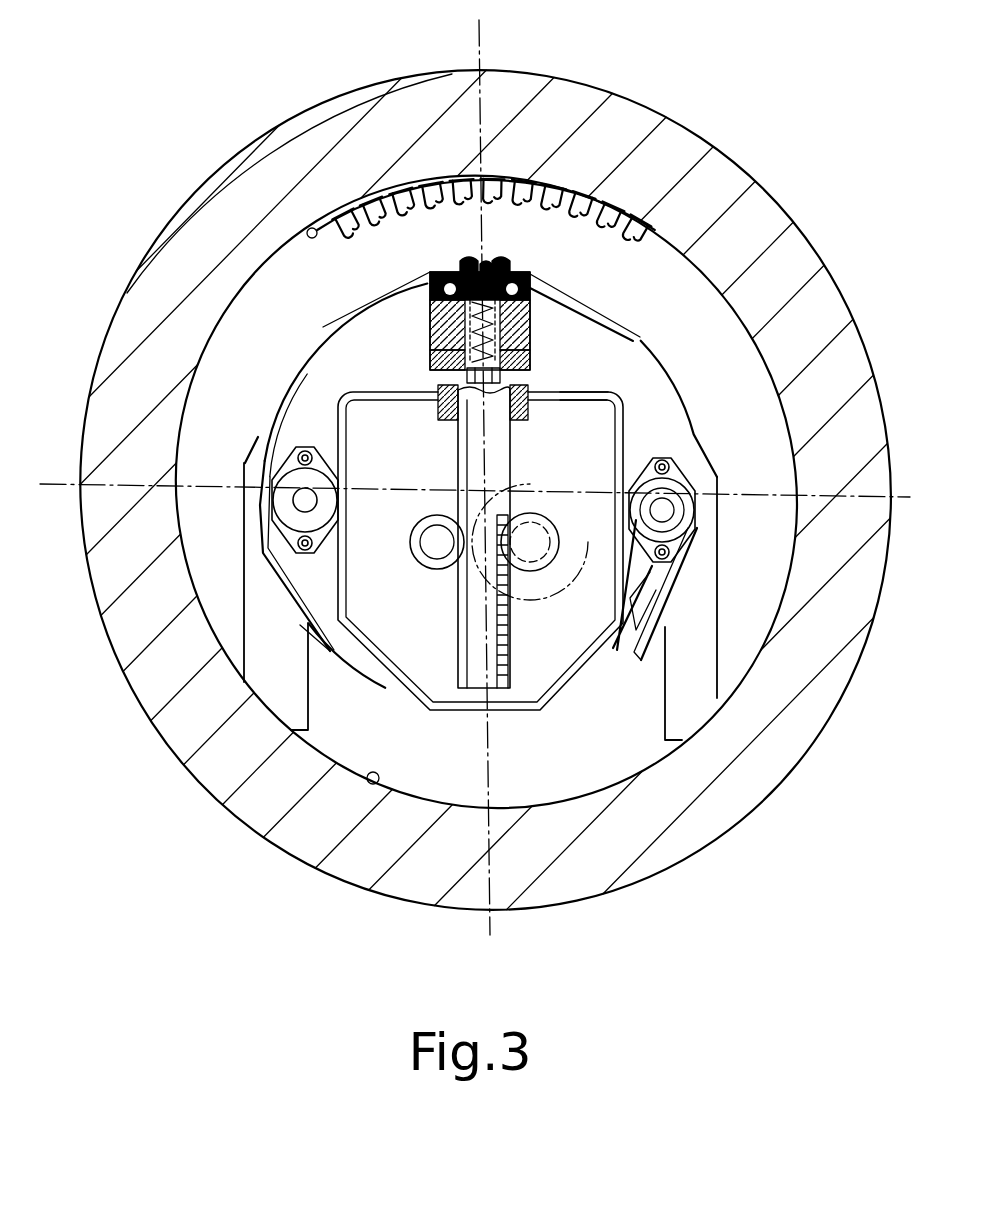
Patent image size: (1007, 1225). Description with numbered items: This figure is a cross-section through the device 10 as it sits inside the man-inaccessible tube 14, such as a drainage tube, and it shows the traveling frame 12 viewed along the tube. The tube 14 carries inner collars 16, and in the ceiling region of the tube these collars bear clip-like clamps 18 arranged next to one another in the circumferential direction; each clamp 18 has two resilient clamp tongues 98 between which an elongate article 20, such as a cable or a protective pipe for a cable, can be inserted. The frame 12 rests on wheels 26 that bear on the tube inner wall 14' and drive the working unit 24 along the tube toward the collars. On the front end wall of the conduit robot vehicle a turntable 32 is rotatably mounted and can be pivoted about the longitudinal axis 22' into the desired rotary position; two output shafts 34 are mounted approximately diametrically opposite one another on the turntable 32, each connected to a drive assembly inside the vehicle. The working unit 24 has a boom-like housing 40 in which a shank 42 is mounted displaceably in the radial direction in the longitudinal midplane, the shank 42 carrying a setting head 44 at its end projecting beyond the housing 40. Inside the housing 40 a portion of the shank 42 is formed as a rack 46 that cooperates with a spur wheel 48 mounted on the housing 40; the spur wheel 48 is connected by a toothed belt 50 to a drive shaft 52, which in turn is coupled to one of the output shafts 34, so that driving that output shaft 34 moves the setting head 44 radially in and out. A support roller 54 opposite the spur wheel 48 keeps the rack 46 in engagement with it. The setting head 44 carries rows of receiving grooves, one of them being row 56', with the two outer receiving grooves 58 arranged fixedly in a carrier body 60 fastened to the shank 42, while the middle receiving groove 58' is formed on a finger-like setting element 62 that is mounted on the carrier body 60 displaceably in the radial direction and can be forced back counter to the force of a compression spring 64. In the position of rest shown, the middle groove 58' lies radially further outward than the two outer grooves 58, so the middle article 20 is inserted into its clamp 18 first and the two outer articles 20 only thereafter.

The device 10 is at (290, 313).
The traveling frame 12 is at (315, 408).
The tube 14 is at (486, 494).
The tube inner wall 14' is at (289, 500).
The inner collar 16 is at (305, 232).
The clamp 18 is at (345, 193).
The elongate article 20 is at (514, 265).
The longitudinal axis 22' is at (475, 477).
The working unit 24 is at (630, 430).
The wheel 26 is at (267, 672).
The turntable 32 is at (640, 375).
The output shaft 34 is at (285, 468).
The housing 40 is at (601, 392).
The shank 42 is at (458, 427).
The setting head 44 is at (430, 362).
The rack 46 is at (508, 628).
The spur wheel 48 is at (545, 560).
The toothed belt 50 is at (576, 485).
The drive shaft 52 is at (668, 515).
The support roller 54 is at (433, 566).
The row of receiving grooves 56' is at (517, 141).
The receiving groove 58 is at (426, 141).
The middle receiving groove 58' is at (459, 141).
The carrier body 60 is at (430, 333).
The setting element 62 is at (440, 300).
The compression spring 64 is at (530, 343).
The clamp tongue 98 is at (356, 226).